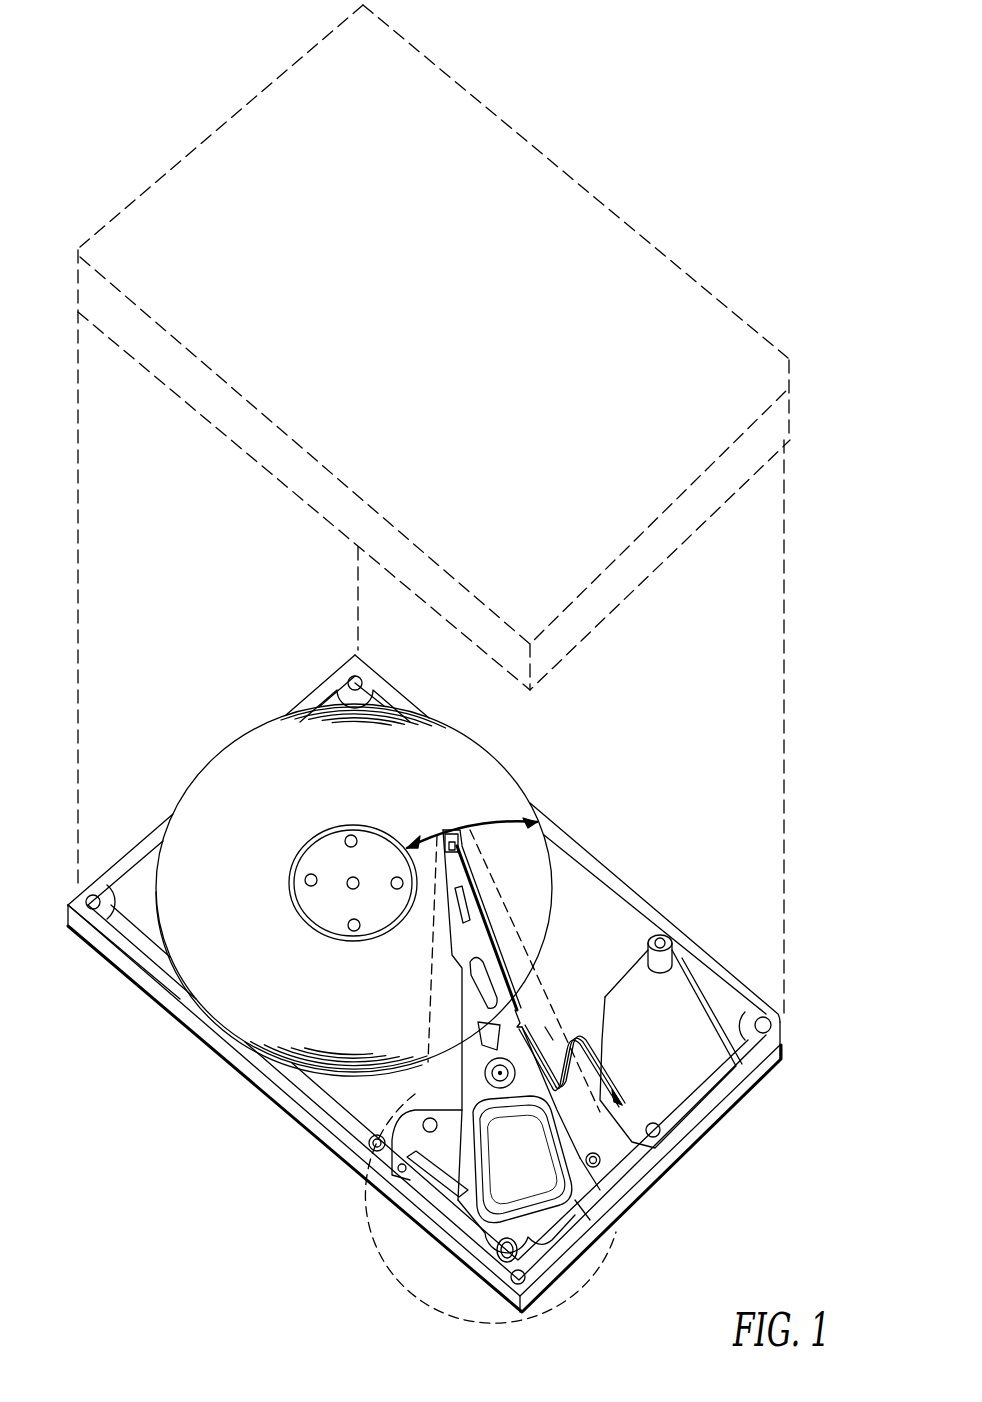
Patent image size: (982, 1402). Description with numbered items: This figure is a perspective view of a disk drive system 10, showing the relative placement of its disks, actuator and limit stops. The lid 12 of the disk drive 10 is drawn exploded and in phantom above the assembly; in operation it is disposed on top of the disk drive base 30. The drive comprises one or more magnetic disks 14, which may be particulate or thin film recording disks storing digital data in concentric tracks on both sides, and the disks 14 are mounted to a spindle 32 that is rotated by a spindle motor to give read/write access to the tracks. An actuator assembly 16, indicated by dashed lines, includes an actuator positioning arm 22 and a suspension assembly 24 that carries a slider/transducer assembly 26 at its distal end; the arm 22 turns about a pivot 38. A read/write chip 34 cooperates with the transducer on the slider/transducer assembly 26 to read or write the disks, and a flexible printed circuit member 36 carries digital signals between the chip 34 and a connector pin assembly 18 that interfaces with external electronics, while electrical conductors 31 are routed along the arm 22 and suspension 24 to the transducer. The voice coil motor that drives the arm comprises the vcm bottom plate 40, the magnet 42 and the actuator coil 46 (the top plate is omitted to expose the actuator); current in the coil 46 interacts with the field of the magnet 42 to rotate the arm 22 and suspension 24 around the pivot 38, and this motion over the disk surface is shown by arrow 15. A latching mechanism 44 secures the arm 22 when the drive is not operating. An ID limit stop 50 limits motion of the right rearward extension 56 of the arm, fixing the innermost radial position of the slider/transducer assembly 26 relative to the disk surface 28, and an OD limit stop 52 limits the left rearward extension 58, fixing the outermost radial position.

The disk drive system 10 is at (305, 1172).
The lid 12 is at (655, 248).
The magnetic disk 14 is at (240, 1032).
The arrow 15 is at (443, 830).
The actuator assembly 16 is at (577, 1067).
The connector pin assembly 18 is at (703, 1080).
The actuator positioning arm 22 is at (463, 985).
The suspension assembly 24 is at (461, 875).
The slider/transducer assembly 26 is at (459, 847).
The disk surface 28 is at (216, 778).
The disk drive base 30 is at (125, 973).
The electrical conductors 31 is at (503, 972).
The spindle 32 is at (306, 868).
The read/write chip 34 is at (545, 1027).
The flexible printed circuit member 36 is at (612, 1057).
The pivot 38 is at (485, 1073).
The vcm bottom plate 40 is at (440, 1170).
The magnet 42 is at (463, 1193).
The latching mechanism 44 is at (530, 1252).
The actuator coil 46 is at (575, 1200).
The ID limit stop 50 is at (600, 1163).
The OD limit stop 52 is at (370, 1140).
The right rearward extension of the actuator positioning arm 56 is at (580, 1178).
The left rearward extension of the actuator positioning arm 58 is at (467, 1192).